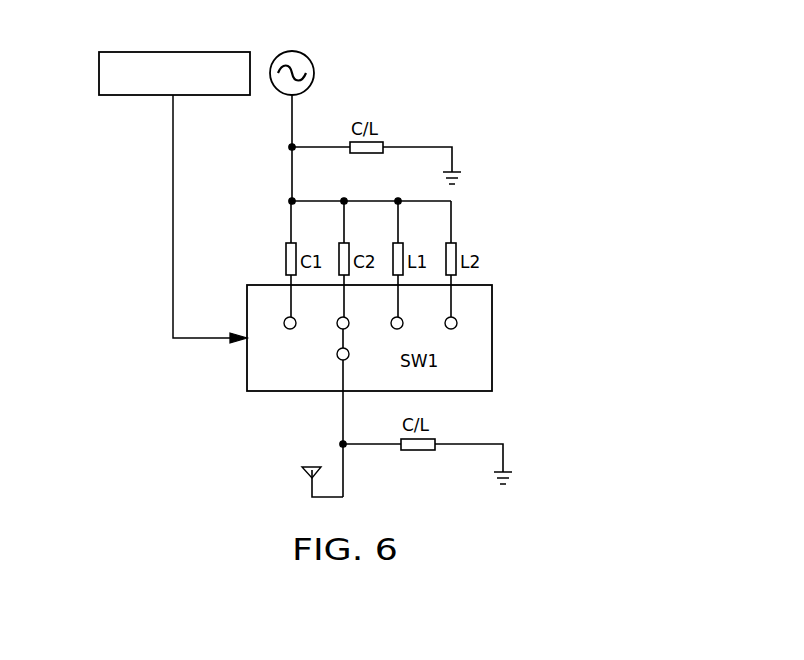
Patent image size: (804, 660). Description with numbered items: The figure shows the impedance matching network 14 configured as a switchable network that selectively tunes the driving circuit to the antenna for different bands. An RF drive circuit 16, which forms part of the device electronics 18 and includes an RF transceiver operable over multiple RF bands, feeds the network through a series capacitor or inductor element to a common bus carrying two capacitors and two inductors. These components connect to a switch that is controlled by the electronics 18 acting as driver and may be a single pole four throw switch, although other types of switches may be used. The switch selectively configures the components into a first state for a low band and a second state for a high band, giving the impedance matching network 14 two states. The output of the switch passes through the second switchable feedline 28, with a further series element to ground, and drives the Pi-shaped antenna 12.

The Pi-shaped antenna 12 is at (303, 470).
The impedance matching network 14 is at (504, 76).
The RF drive circuit 16 is at (314, 72).
The device electronics 18 is at (99, 73).
The second switchable feedline 28 is at (342, 410).